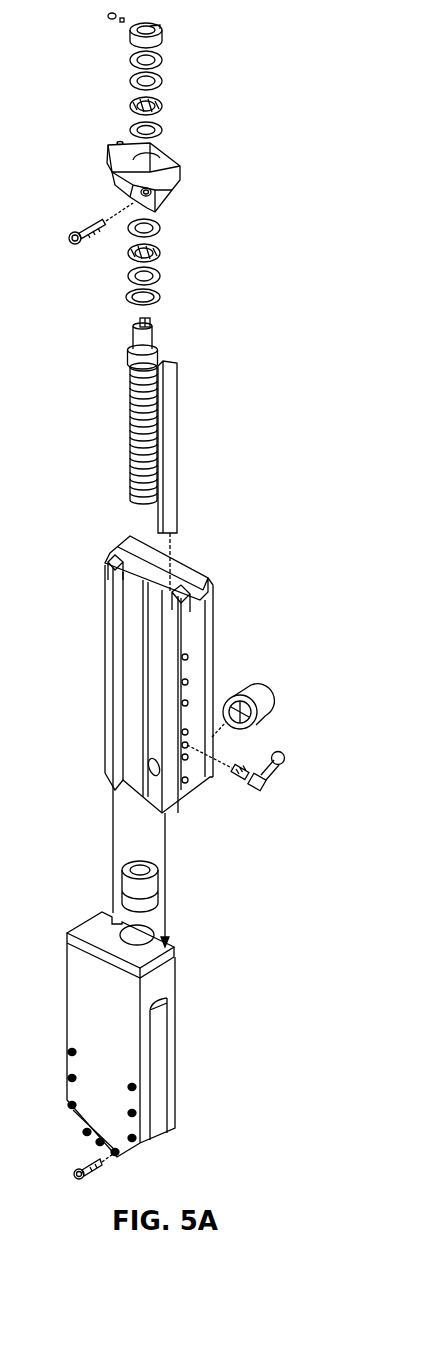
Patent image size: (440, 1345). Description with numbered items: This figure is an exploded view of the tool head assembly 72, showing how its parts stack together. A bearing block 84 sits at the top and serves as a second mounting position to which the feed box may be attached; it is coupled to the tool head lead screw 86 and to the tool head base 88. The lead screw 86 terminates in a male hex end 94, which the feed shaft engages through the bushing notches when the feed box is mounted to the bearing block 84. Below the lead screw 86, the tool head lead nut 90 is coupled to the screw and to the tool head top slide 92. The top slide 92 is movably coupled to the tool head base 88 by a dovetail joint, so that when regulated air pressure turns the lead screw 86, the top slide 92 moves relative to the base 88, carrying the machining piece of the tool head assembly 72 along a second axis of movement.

The tool head assembly 72 is at (245, 850).
The bearing block 84 is at (158, 163).
The tool head lead screw 86 is at (137, 432).
The tool head base 88 is at (200, 627).
The tool head lead nut 90 is at (137, 888).
The tool head top slide 92 is at (120, 1028).
The male hex end 94 is at (143, 317).